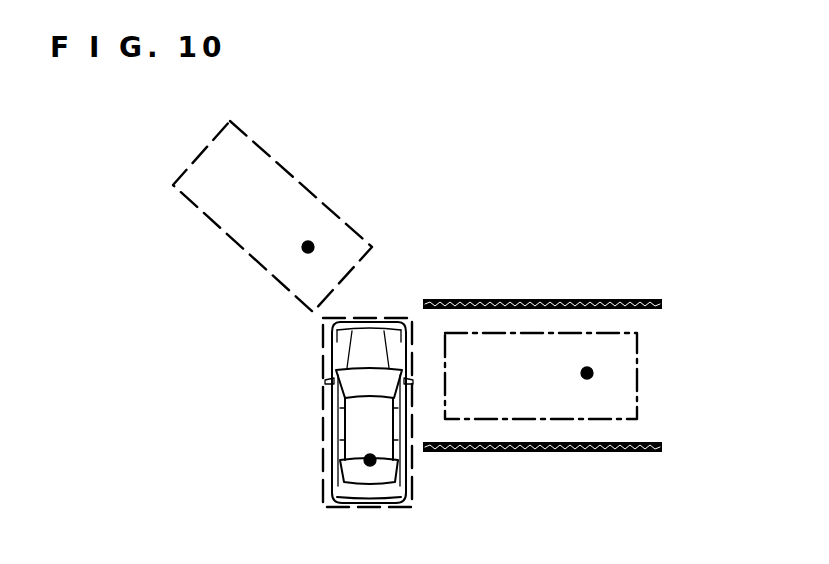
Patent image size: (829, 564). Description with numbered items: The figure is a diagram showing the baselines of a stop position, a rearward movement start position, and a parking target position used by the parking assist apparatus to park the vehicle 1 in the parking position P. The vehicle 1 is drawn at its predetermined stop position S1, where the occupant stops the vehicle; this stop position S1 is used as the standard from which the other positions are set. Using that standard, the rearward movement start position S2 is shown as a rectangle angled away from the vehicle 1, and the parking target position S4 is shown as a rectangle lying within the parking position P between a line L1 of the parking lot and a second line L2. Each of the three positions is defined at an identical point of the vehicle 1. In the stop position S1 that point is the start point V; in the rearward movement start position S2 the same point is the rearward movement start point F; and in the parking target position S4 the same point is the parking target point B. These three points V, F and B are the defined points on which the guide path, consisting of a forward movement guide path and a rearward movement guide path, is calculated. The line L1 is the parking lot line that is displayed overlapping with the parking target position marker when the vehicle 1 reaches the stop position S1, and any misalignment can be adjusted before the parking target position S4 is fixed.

The rearward movement start position S2 is at (307, 188).
The rearward movement start point F is at (302, 250).
The stop position S1 is at (322, 403).
The vehicle 1 is at (398, 488).
The start point V is at (371, 466).
The line of a parking lot L1 is at (538, 298).
The second parking lot line L2 is at (565, 453).
The parking target position S4 is at (639, 357).
The parking target point B is at (580, 373).
The parking position P is at (616, 400).